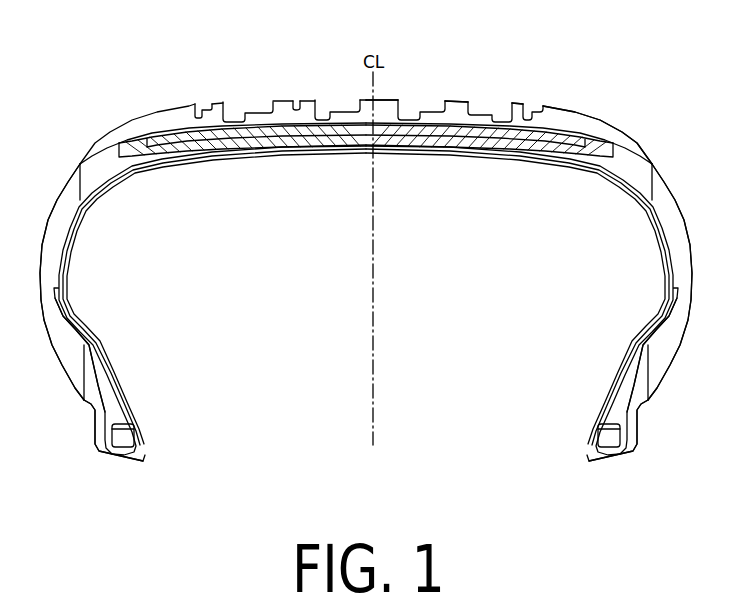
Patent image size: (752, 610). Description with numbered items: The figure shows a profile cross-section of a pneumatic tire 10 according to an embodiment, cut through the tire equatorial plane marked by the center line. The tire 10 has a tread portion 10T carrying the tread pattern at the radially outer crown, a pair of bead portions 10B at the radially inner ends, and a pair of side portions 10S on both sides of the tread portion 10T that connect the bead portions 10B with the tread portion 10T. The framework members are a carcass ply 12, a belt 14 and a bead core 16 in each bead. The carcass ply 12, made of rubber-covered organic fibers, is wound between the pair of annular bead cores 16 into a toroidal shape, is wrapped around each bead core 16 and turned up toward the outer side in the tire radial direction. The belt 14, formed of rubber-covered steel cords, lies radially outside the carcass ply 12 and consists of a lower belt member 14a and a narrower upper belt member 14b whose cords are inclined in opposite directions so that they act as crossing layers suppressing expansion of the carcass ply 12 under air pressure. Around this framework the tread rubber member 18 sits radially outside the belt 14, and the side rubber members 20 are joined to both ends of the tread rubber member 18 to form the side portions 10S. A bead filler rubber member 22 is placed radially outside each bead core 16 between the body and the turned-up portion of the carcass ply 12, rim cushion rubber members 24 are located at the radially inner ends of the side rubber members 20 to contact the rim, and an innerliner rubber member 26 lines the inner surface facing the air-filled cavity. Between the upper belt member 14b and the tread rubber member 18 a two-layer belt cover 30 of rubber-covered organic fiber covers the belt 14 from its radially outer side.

The tire 10 is at (634, 61).
The tread portion 10T is at (589, 99).
The side portions 10S is at (694, 273).
The bead portions 10B is at (641, 447).
The carcass ply 12 is at (193, 152).
The belt 14 is at (366, 170).
The lower belt member 14a is at (272, 186).
The upper belt member 14b is at (253, 135).
The bead core 16 is at (604, 436).
The tread rubber member 18 is at (518, 107).
The side rubber members 20 is at (670, 232).
The bead filler rubber member 22 is at (613, 397).
The rim cushion rubber members 24 is at (637, 408).
The innerliner rubber member 26 is at (166, 162).
The belt cover 30 is at (189, 155).